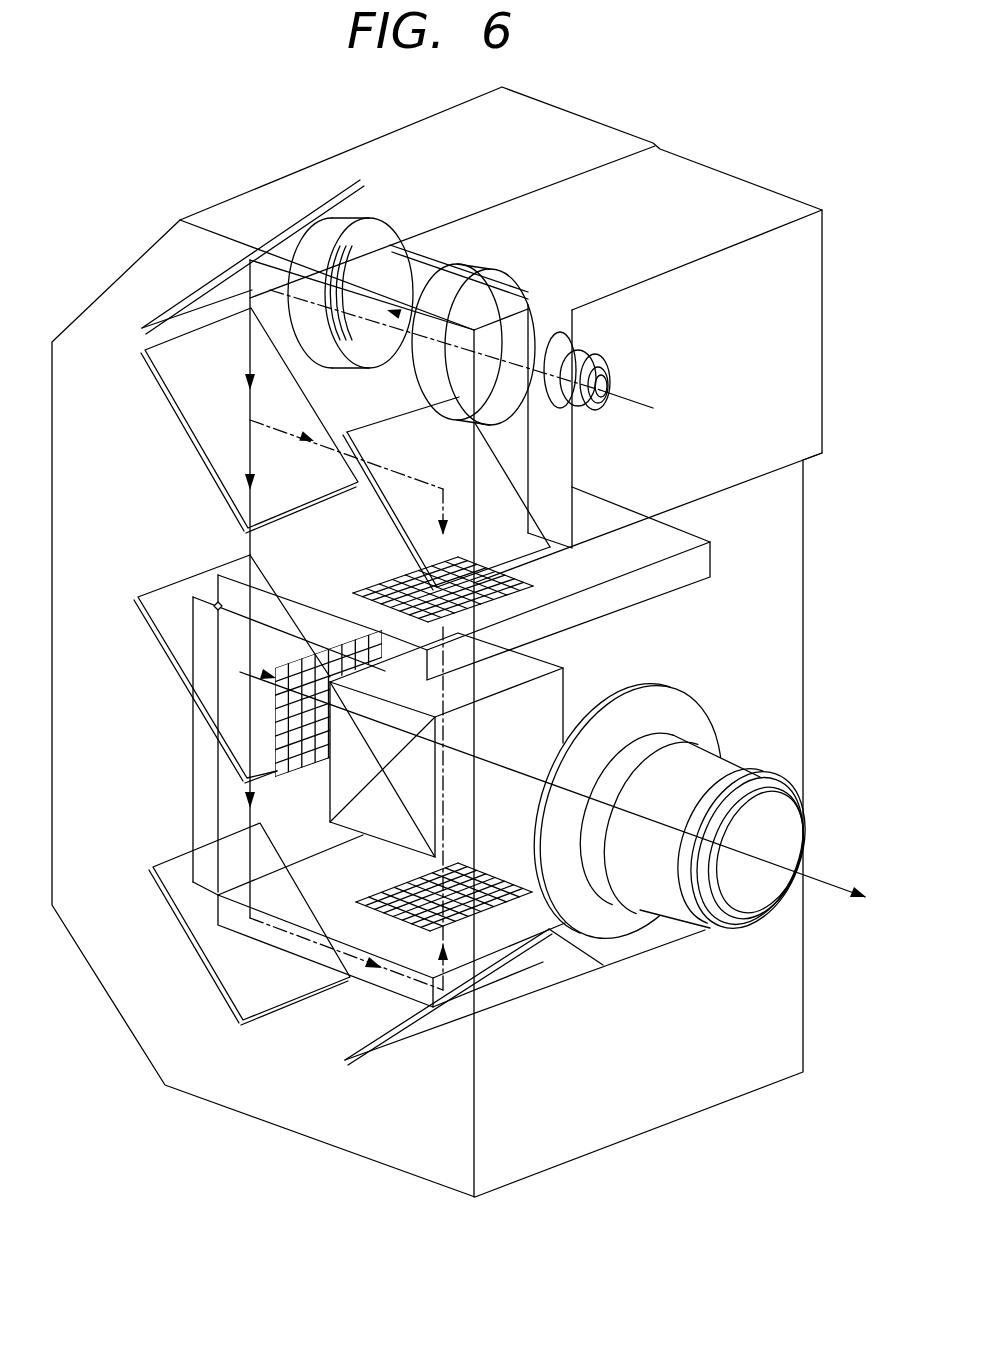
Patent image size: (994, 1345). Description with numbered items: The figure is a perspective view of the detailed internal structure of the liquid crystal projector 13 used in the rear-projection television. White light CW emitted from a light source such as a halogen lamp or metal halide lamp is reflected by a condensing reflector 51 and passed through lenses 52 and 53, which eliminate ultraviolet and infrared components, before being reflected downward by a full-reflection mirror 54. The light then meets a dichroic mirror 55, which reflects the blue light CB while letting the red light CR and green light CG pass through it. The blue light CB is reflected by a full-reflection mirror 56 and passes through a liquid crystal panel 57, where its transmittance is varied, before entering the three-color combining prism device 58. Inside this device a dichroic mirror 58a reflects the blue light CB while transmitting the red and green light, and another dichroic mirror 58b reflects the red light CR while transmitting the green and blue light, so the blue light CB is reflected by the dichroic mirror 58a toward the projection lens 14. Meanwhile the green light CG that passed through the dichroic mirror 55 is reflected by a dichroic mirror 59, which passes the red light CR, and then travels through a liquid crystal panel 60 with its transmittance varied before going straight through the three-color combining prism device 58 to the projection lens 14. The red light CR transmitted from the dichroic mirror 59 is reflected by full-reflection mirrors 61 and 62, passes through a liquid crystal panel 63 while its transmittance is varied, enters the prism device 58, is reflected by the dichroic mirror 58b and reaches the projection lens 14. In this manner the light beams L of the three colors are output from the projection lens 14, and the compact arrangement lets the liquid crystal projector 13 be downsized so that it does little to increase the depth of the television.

The liquid crystal projector 13 is at (140, 230).
The projection lens 14 is at (777, 822).
The condensing reflector 51 is at (470, 268).
The lens 52 is at (388, 238).
The lens 53 is at (352, 218).
The full-reflection mirror 54 is at (320, 195).
The dichroic mirror 55 is at (210, 466).
The full-reflection mirror 56 is at (397, 530).
The liquid crystal panel 57 is at (533, 593).
The three-color combining prism device 58 is at (584, 667).
The dichroic mirror 58a is at (407, 800).
The dichroic mirror 58b is at (407, 755).
The dichroic mirror 59 is at (158, 640).
The liquid crystal panel 60 is at (311, 773).
The full-reflection mirror 61 is at (322, 998).
The full-reflection mirror 62 is at (401, 1037).
The liquid crystal panel 63 is at (417, 877).
The white light CW is at (250, 350).
The blue light CB is at (150, 408).
The green light CG is at (263, 680).
The red light CR is at (287, 887).
The light beams L is at (833, 880).